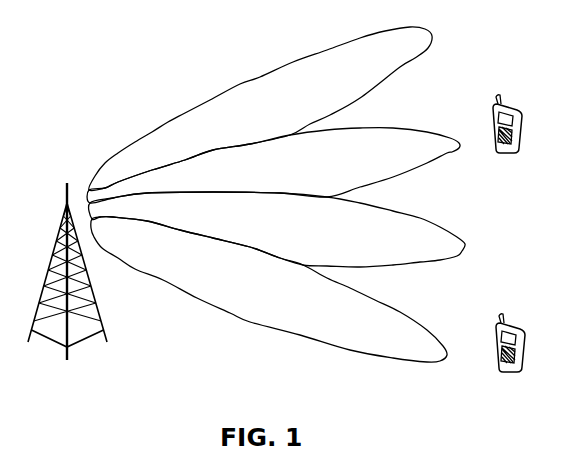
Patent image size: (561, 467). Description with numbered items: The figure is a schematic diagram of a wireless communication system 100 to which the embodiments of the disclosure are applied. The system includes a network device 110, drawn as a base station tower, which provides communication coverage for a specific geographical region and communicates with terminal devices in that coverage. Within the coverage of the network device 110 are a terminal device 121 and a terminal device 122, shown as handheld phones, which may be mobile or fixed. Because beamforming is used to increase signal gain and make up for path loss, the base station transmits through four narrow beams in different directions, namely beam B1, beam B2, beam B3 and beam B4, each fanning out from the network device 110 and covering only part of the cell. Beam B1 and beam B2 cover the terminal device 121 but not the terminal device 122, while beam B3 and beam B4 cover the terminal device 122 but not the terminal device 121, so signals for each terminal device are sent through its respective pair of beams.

The wireless communication system 100 is at (60, 54).
The network device 110 is at (52, 244).
The terminal device 121 is at (487, 113).
The terminal device 122 is at (487, 338).
The beam B1 is at (260, 109).
The beam B2 is at (273, 166).
The beam B3 is at (277, 229).
The beam B4 is at (269, 290).